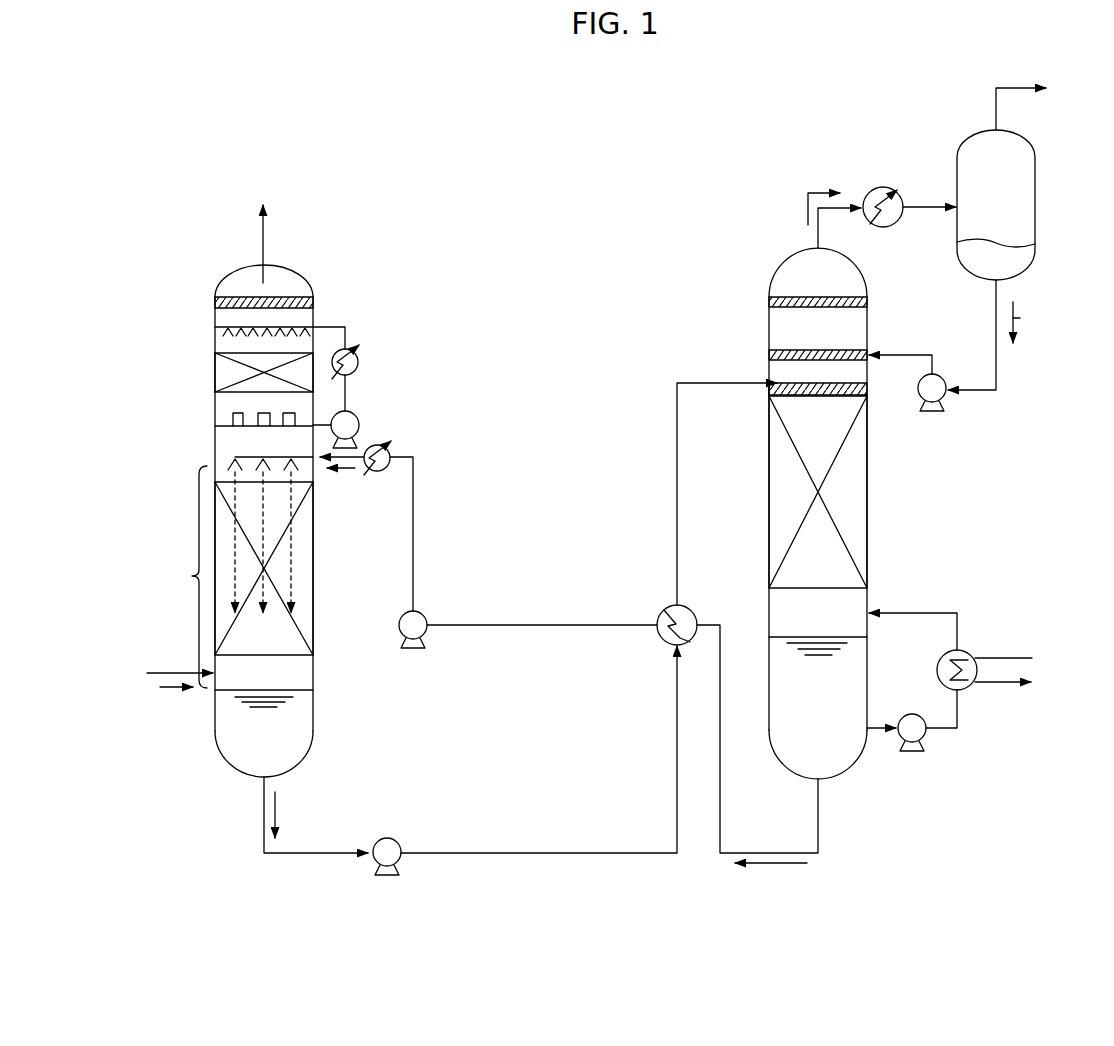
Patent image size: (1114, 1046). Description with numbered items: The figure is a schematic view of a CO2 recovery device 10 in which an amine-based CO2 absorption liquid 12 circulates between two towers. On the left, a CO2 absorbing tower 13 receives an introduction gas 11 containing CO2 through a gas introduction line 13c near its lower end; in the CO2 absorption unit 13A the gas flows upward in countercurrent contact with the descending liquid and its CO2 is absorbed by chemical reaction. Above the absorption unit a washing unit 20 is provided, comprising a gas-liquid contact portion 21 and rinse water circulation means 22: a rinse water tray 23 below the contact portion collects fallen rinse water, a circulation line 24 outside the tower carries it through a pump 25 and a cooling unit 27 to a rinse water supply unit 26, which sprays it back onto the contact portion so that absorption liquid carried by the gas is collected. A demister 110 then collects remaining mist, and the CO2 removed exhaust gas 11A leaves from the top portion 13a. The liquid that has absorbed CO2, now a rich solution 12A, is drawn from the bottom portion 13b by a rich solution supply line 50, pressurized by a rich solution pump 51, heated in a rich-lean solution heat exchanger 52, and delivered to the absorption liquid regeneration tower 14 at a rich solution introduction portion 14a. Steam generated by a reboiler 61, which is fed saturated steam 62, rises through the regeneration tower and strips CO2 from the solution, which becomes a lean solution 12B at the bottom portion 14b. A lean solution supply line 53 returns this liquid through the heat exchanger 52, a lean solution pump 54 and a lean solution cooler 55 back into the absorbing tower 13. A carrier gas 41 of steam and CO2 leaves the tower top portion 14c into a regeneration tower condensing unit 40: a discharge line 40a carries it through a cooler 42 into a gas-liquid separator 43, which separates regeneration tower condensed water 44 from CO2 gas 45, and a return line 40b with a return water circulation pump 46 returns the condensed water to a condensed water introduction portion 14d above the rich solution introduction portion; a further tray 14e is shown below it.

The CO2 recovery device 10 is at (458, 152).
The introduction gas 11 is at (177, 693).
The CO2 removed exhaust gas 11A is at (262, 240).
The demister 110 is at (243, 297).
The CO2 absorption liquid 12 is at (298, 590).
The rich solution 12A is at (280, 808).
The lean solution 12B is at (785, 865).
The CO2 absorbing tower 13 is at (192, 416).
The top portion 13a is at (283, 265).
The bottom portion 13b is at (297, 768).
The gas introduction line 13c is at (175, 668).
The CO2 absorption unit 13A is at (192, 576).
The absorption liquid regeneration tower 14 is at (797, 247).
The rich solution introduction portion 14a is at (770, 386).
The bottom portion 14b is at (848, 770).
The tower top portion 14c is at (850, 252).
The condensed water introduction portion 14d is at (870, 350).
The lower tray 14e is at (858, 370).
The washing unit 20 is at (381, 298).
The gas-liquid contact portion 21 is at (222, 370).
The rinse water circulation means 22 is at (381, 367).
The rinse water tray 23 is at (272, 418).
The circulation line 24 is at (348, 388).
The pump 25 is at (360, 424).
The rinse water supply unit 26 is at (286, 325).
The cooling unit 27 is at (352, 372).
The regeneration tower condensing unit 40 is at (855, 158).
The discharge line 40a is at (927, 198).
The return line 40b is at (998, 378).
The carrier gas 41 is at (816, 182).
The cooler 42 is at (885, 186).
The gas-liquid separator 43 is at (1037, 203).
The regeneration tower condensed water 44 is at (1020, 318).
The CO2 gas 45 is at (1010, 85).
The return water circulation pump 46 is at (933, 373).
The rich solution supply line 50 is at (340, 857).
The rich solution pump 51 is at (378, 865).
The rich-lean solution heat exchanger 52 is at (665, 645).
The lean solution supply line 53 is at (720, 805).
The lean solution pump 54 is at (422, 612).
The lean solution cooler 55 is at (376, 471).
The reboiler 61 is at (965, 652).
The saturated steam 62 is at (1010, 655).